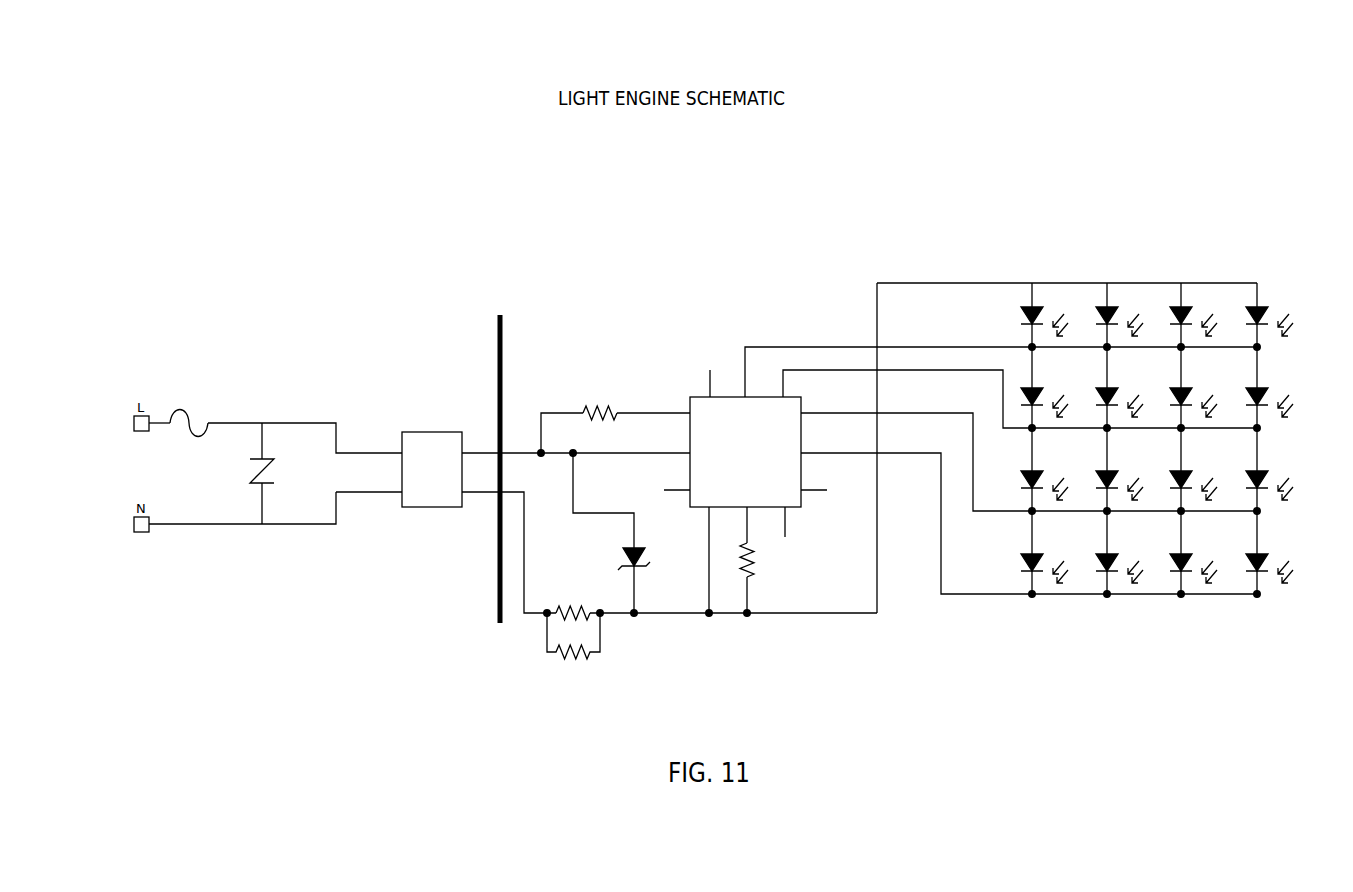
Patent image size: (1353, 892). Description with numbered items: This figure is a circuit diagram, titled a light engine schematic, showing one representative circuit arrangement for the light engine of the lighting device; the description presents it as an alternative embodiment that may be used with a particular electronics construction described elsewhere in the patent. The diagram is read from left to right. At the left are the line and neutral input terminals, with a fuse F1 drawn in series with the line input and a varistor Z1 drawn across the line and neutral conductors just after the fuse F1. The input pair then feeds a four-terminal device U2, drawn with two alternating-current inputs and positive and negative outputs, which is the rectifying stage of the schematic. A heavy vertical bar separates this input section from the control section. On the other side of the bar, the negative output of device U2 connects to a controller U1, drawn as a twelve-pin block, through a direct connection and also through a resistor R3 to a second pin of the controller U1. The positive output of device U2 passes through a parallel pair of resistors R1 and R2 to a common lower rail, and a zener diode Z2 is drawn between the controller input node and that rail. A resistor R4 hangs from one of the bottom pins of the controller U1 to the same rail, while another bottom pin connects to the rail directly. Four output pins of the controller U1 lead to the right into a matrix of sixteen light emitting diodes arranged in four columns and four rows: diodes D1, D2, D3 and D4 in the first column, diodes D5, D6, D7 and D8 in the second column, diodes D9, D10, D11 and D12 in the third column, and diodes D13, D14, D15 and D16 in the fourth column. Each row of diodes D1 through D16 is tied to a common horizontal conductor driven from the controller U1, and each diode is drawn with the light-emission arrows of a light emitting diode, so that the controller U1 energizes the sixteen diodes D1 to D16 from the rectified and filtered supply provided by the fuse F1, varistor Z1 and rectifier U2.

The fuse F1 is at (189, 414).
The varistor Z1 is at (252, 473).
The bridge rectifier U2 is at (430, 469).
The resistor R3 is at (600, 404).
The LED driver integrated circuit U1 is at (745, 453).
The zener diode Z2 is at (625, 580).
The resistor R1 is at (573, 601).
The resistor R2 is at (573, 636).
The resistor R4 is at (734, 560).
The light emitting diode D1 is at (1039, 320).
The light emitting diode D2 is at (1039, 401).
The light emitting diode D3 is at (1039, 484).
The light emitting diode D4 is at (1039, 567).
The light emitting diode D5 is at (1114, 320).
The light emitting diode D6 is at (1114, 401).
The light emitting diode D7 is at (1114, 484).
The light emitting diode D8 is at (1114, 567).
The light emitting diode D9 is at (1188, 320).
The light emitting diode D10 is at (1184, 401).
The light emitting diode D11 is at (1184, 484).
The light emitting diode D12 is at (1184, 567).
The light emitting diode D13 is at (1260, 320).
The light emitting diode D14 is at (1260, 401).
The light emitting diode D15 is at (1260, 484).
The light emitting diode D16 is at (1260, 567).